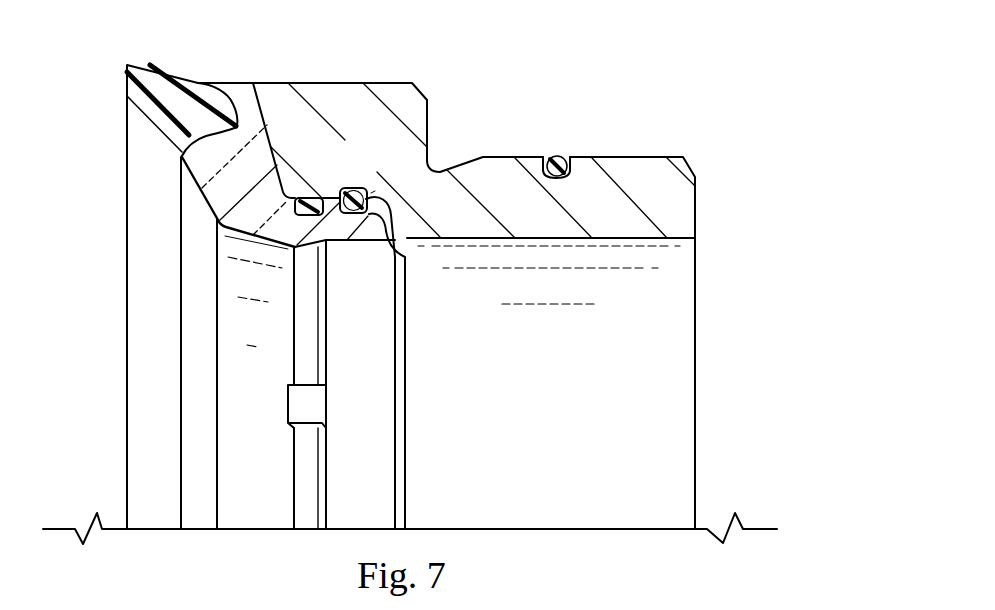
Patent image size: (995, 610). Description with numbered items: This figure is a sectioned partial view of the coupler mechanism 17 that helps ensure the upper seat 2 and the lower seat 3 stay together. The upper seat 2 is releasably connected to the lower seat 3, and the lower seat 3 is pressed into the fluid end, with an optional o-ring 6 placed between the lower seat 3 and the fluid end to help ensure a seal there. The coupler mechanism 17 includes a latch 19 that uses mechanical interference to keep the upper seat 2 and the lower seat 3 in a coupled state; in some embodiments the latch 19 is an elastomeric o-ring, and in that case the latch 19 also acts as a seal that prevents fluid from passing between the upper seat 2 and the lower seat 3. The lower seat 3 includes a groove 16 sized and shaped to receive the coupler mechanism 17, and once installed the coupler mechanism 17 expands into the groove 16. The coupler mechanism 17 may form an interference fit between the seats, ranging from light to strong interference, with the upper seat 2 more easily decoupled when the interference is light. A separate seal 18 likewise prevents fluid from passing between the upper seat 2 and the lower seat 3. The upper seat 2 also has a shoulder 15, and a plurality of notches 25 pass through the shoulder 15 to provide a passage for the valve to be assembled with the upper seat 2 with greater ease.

The upper seat 2 is at (226, 93).
The lower seat 3 is at (330, 93).
The o-ring 6 is at (555, 153).
The shoulder 15 is at (324, 242).
The groove 16 is at (343, 190).
The coupler mechanism 17 is at (373, 193).
The seal 18 is at (307, 198).
The latch 19 is at (374, 206).
The notches 25 is at (297, 406).